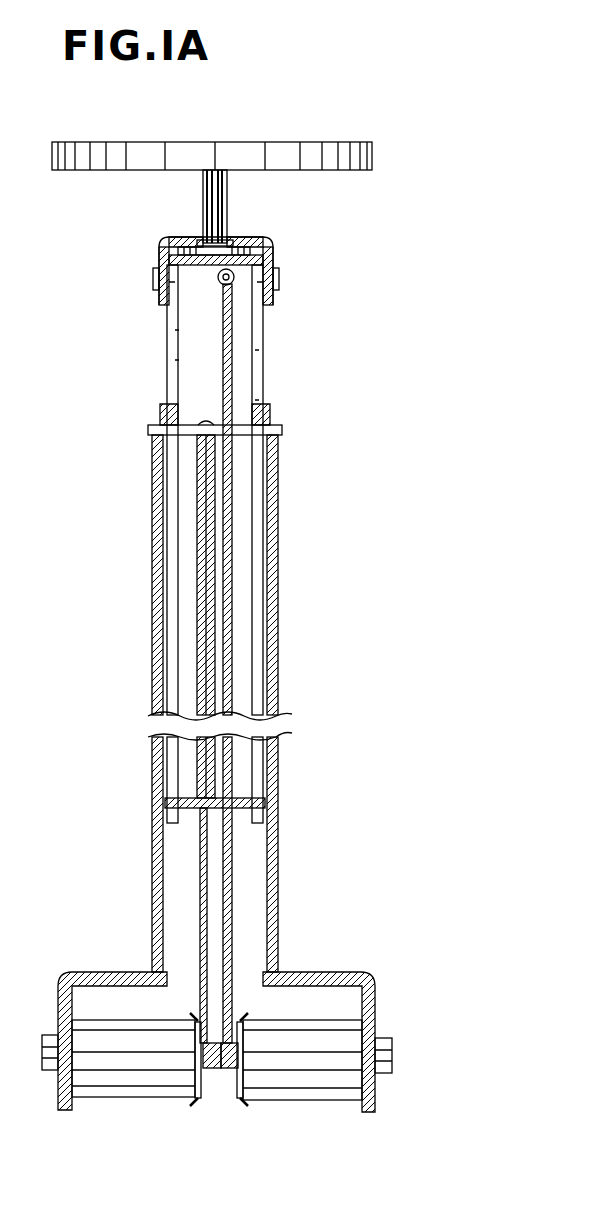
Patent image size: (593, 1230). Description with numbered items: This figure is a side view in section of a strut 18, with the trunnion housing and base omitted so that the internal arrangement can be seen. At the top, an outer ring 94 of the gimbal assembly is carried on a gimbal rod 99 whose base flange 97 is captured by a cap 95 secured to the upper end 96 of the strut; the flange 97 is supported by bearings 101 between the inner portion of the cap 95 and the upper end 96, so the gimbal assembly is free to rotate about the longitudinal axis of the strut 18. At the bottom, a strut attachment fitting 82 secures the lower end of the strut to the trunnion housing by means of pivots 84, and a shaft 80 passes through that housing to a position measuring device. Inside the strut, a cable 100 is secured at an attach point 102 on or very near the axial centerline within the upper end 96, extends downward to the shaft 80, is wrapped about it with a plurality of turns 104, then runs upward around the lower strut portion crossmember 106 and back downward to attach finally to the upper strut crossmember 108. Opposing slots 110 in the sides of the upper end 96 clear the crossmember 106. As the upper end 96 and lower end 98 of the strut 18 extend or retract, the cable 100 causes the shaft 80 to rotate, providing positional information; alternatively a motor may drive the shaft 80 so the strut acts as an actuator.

The strut 18 is at (130, 571).
The outer ring 94 is at (165, 143).
The gimbal rod 99 is at (228, 204).
The flange 97 is at (208, 242).
The bearings 101 is at (163, 243).
The cap 95 is at (168, 252).
The upper end of strut 96 is at (270, 262).
The opposing slots 110 is at (263, 380).
The attach point 102 is at (232, 280).
The cable 100 is at (198, 496).
The lower strut portion crossmember 106 is at (283, 436).
The lower end of strut 98 is at (280, 598).
The upper strut crossmember 108 is at (165, 807).
The strut attachment fitting 82 is at (106, 972).
The pivots 84 is at (48, 1035).
The turns 104 is at (208, 1070).
The shaft 80 is at (228, 1070).